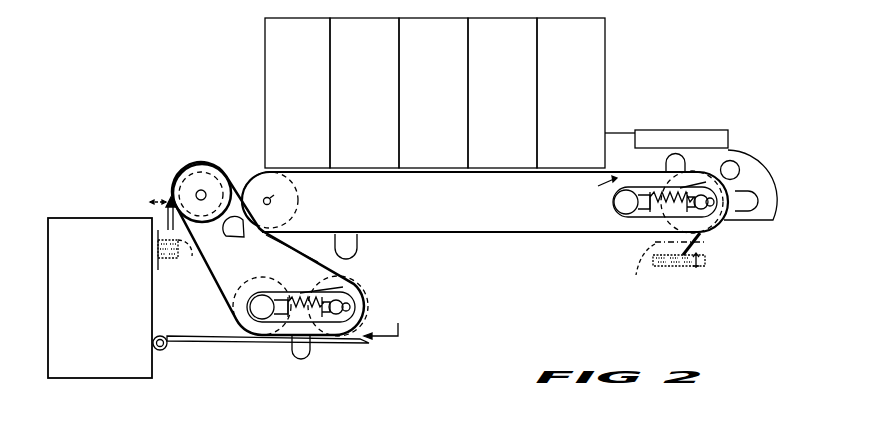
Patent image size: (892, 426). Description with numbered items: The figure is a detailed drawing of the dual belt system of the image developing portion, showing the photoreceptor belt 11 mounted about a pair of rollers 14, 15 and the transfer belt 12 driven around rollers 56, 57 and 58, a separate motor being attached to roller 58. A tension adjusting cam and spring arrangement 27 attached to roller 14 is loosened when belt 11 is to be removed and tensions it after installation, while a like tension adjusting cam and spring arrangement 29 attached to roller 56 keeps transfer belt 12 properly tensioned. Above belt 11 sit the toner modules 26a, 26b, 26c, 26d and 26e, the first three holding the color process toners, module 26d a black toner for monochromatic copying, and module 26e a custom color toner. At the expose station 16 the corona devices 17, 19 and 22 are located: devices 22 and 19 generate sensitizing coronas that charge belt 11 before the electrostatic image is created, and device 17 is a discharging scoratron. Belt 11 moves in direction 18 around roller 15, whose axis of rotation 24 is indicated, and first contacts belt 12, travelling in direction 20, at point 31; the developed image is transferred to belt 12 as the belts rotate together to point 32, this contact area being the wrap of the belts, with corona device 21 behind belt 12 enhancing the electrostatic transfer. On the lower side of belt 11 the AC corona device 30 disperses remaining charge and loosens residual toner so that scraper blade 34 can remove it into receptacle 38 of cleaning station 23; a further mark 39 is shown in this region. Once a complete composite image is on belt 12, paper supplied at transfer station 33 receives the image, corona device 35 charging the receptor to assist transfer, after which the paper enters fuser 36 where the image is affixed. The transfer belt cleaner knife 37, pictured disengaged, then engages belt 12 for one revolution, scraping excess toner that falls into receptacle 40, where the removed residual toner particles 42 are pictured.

The photoreceptor belt 11 is at (413, 234).
The transfer belt 12 is at (224, 272).
The roller 14 is at (722, 228).
The roller 15 is at (296, 206).
The expose station 16 is at (700, 133).
The corona device 17 is at (666, 162).
The direction 18 is at (601, 189).
The corona device 19 is at (722, 171).
The direction 20 is at (224, 284).
The corona device 21 is at (239, 239).
The corona device 22 is at (749, 200).
The cleaning station 23 is at (663, 266).
The axis of rotation 24 is at (270, 200).
The toner module 26a is at (426, 163).
The toner module 26b is at (484, 163).
The toner module 26c is at (544, 163).
The toner module 26d is at (376, 163).
The toner module 26e is at (309, 163).
The tension adjusting cam and spring arrangement 27 is at (637, 218).
The tension adjusting cam and spring arrangement 29 is at (309, 290).
The AC corona device 30 is at (358, 244).
The point 31 is at (235, 190).
The point 32 is at (284, 235).
The transfer station 33 is at (381, 322).
The scraper blade 34 is at (703, 237).
The corona device 35 is at (297, 351).
The fuser 36 is at (66, 218).
The transfer belt cleaner knife 37 is at (166, 210).
The receptacle 38 is at (641, 268).
The gap 39 is at (703, 263).
The receptacle 40 is at (189, 260).
The removed residual toner particles 42 is at (166, 256).
The roller 56 is at (366, 289).
The roller 57 is at (245, 330).
The roller 58 is at (204, 172).